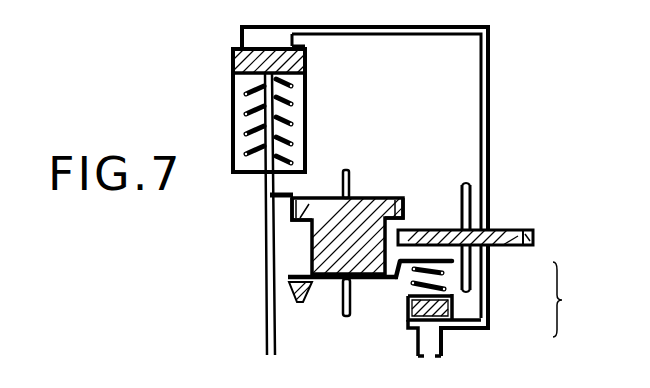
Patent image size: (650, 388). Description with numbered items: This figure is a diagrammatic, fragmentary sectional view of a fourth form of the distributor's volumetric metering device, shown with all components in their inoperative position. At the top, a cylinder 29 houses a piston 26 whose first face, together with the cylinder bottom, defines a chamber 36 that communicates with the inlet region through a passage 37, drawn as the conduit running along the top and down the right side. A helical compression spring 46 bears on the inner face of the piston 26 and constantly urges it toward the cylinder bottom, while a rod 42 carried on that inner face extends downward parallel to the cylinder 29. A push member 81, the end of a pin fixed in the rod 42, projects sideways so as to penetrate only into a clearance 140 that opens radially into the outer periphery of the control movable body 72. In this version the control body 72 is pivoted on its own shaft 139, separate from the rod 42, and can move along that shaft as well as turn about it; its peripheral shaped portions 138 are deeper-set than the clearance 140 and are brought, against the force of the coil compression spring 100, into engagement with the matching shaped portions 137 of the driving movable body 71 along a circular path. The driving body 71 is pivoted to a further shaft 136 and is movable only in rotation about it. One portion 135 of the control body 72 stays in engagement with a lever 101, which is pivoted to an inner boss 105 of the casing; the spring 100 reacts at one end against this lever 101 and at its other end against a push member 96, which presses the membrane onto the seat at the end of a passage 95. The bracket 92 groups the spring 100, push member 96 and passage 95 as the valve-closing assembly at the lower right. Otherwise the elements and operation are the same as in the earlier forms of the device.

The chamber 36 is at (281, 42).
The passage 37 is at (489, 95).
The piston 26 is at (307, 63).
The cylinder 29 is at (306, 128).
The helical compression spring 46 is at (232, 116).
The rod 42 is at (263, 188).
The push member 81 is at (302, 194).
The control movable body 72 is at (364, 207).
The clearance 140 is at (402, 199).
The peripheral shaped portions 138 is at (290, 229).
The shaft 139 is at (350, 168).
The portion of movable control body 135 is at (341, 285).
The lever 101 is at (389, 281).
The inner boss 105 is at (299, 303).
The shaft 136 is at (461, 186).
The driving movable body 71 is at (508, 228).
The matching shaped portions 137 is at (530, 229).
The coil compression spring 100 is at (450, 273).
The push member 96 is at (450, 304).
The passage 95 is at (433, 340).
The valve assembly 92 is at (578, 299).